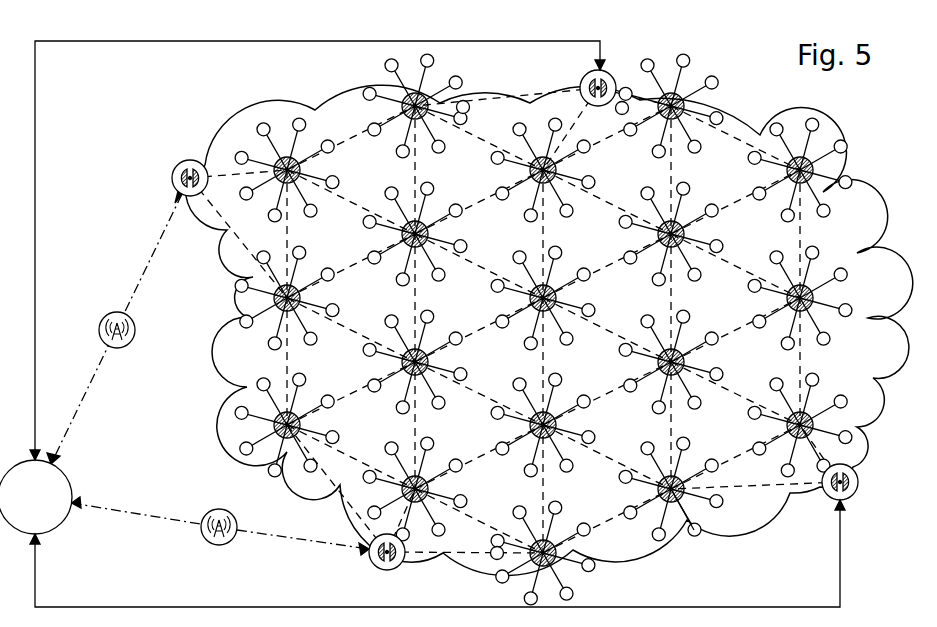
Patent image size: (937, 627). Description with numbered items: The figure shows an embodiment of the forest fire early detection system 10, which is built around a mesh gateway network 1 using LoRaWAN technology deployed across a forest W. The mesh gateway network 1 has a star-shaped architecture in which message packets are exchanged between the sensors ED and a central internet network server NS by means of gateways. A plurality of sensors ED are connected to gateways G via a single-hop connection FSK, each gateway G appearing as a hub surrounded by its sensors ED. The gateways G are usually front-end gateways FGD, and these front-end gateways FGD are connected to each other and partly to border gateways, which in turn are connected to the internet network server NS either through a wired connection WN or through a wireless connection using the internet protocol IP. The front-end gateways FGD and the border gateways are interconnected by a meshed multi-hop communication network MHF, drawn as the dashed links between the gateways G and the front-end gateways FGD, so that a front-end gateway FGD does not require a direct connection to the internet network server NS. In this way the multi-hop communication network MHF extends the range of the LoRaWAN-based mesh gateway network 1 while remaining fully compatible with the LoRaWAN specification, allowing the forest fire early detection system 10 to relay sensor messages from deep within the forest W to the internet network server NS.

The forest fire early detection system 10 is at (660, 65).
The mesh gateway network 1 is at (543, 329).
The wired connection WN is at (35, 108).
The internet network server NS is at (36, 497).
The forest W is at (213, 362).
The front-end gateway FGD is at (177, 193).
The multi-hop communication network MHF is at (226, 250).
The gateway G is at (258, 453).
The end devices/sensors ED is at (300, 118).
The internet protocol IP is at (201, 533).
The single-hop connection FSK is at (703, 522).